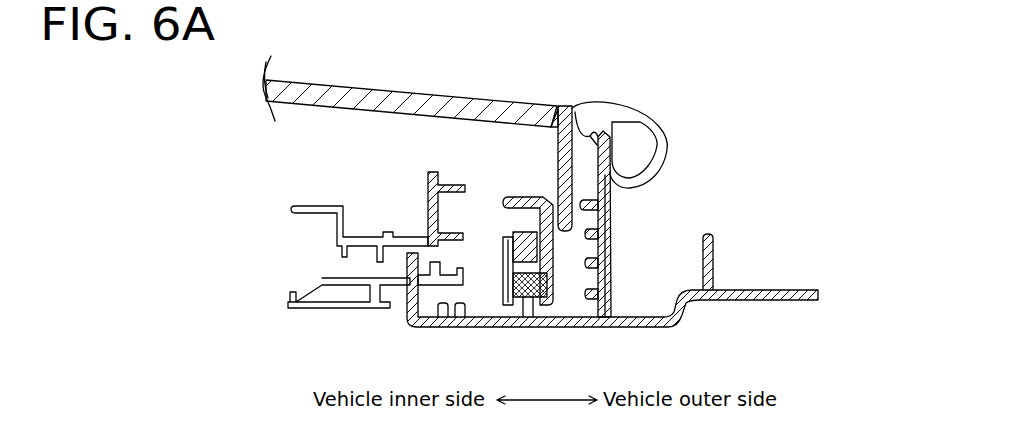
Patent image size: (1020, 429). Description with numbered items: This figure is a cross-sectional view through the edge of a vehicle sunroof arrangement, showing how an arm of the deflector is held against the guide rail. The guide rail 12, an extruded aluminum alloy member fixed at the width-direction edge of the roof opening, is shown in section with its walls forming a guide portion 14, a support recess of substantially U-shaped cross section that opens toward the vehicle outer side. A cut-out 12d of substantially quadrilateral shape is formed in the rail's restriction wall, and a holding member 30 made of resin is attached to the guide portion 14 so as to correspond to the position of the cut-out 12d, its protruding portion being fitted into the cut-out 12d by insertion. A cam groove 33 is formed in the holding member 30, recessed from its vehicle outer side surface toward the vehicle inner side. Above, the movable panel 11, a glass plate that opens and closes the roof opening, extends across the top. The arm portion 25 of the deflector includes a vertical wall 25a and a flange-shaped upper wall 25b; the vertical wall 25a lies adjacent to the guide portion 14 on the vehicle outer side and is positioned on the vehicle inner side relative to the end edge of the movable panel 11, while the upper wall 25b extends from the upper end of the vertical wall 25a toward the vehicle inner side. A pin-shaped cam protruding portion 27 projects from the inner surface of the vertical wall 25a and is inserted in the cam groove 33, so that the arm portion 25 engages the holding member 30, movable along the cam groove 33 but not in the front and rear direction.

The movable panel 11 is at (306, 79).
The guide rail 12 is at (664, 336).
The cut-out 12d is at (515, 230).
The guide portion 14 is at (526, 320).
The arm portion 25 is at (590, 200).
The vertical wall 25a is at (562, 241).
The upper wall 25b is at (533, 186).
The cam protruding portion 27 is at (504, 288).
The holding member 30 is at (500, 240).
The cam groove 33 is at (581, 254).